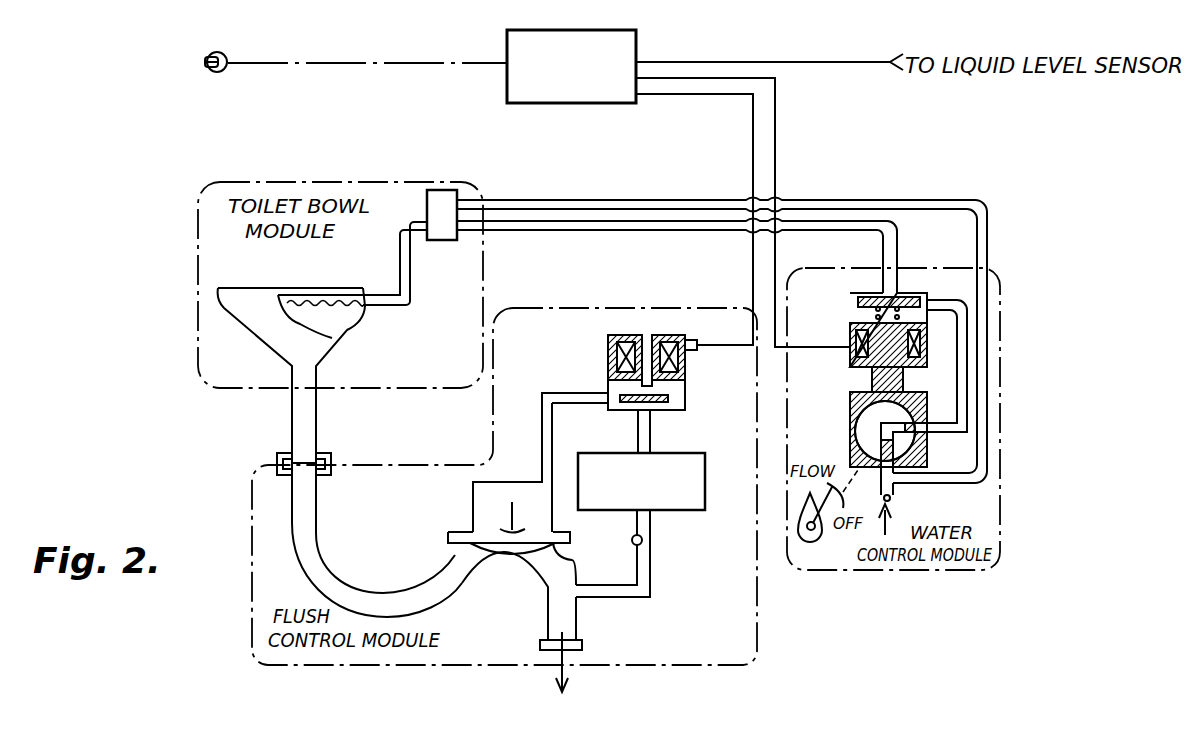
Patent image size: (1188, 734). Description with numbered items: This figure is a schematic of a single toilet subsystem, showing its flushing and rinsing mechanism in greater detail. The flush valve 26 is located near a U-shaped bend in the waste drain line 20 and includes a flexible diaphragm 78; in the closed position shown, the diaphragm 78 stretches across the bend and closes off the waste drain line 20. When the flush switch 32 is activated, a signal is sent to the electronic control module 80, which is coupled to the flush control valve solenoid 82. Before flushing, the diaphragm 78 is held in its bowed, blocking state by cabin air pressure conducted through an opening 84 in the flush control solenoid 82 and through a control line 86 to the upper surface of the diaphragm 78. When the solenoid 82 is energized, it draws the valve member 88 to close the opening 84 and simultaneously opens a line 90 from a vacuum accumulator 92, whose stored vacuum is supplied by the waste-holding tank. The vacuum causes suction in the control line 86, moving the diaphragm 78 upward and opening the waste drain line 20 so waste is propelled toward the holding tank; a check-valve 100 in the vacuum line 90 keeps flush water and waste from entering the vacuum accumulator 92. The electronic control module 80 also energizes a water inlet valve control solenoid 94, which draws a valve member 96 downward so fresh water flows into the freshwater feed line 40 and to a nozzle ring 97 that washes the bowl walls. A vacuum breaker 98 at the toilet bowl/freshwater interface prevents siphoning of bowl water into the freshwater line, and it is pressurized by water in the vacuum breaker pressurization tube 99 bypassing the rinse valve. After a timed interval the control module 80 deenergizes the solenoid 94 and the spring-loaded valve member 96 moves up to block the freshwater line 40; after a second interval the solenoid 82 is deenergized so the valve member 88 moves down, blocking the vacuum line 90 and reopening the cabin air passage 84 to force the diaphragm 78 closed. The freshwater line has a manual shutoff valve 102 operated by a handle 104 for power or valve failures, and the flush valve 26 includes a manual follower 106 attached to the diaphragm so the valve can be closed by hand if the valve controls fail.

The flush switch 32 is at (214, 73).
The electronic control module 80 is at (603, 103).
The vacuum breaker 98 is at (450, 190).
The vacuum breaker pressurization tube 99 is at (622, 202).
The freshwater feed line 40 is at (890, 250).
The nozzle ring 97 is at (318, 298).
The waste drain line 20 is at (448, 582).
The flush valve 26 is at (472, 494).
The manual follower 106 is at (522, 518).
The flexible diaphragm 78 is at (560, 550).
The control line 86 is at (548, 432).
The flush control valve solenoid 82 is at (607, 350).
The opening 84 is at (647, 335).
The valve member 88 is at (668, 400).
The line 90 is at (652, 437).
The vacuum accumulator 92 is at (705, 468).
The check-valve 100 is at (643, 539).
The water inlet valve control solenoid 94 is at (848, 366).
The valve member 96 is at (925, 300).
The manual shutoff valve 102 is at (857, 421).
The handle 104 is at (811, 543).